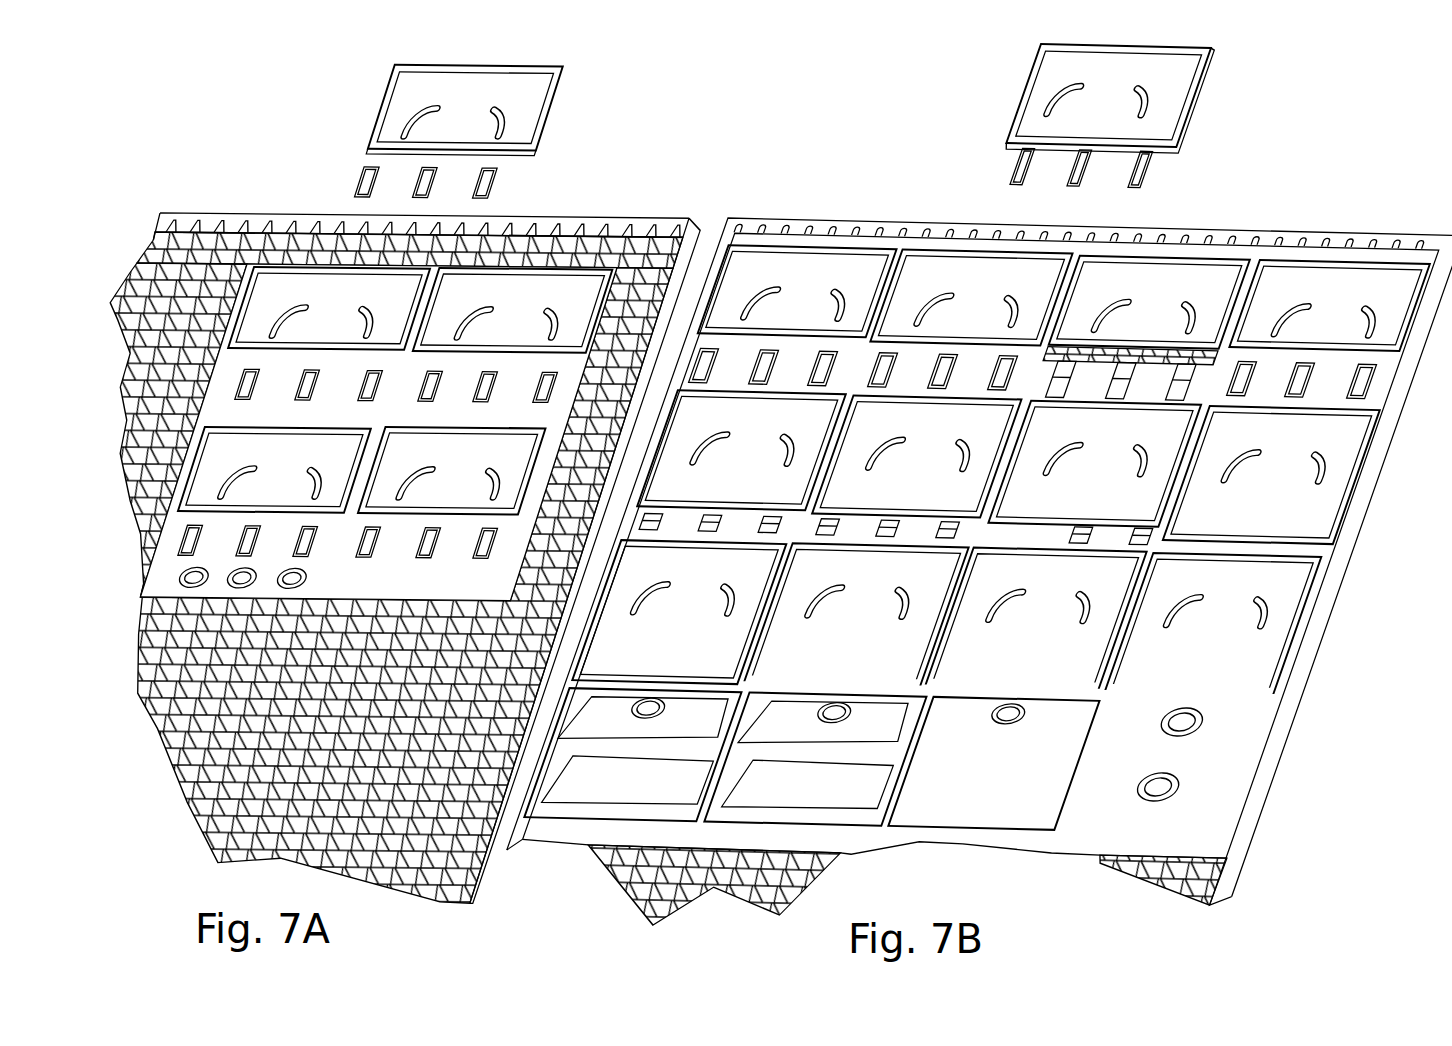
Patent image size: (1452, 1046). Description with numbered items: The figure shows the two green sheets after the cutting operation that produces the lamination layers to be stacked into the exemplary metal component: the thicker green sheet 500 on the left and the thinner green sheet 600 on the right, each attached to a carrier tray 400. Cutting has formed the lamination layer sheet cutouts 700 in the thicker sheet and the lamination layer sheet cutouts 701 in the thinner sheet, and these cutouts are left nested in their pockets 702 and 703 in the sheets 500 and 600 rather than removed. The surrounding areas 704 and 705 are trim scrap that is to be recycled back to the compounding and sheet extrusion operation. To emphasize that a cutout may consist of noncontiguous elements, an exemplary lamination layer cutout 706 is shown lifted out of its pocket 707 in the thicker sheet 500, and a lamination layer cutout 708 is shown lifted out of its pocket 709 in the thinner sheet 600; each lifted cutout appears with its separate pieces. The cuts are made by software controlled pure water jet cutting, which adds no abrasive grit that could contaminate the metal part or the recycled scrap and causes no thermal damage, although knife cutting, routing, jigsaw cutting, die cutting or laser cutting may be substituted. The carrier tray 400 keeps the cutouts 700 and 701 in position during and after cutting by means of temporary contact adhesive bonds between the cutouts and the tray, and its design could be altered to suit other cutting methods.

In FIG. 7A, the carrier tray 400 is at (607, 213).
In FIG. 7B, the carrier tray 400 is at (928, 215).
In FIG. 7A, the thicker green sheet 500 is at (617, 250).
In FIG. 7B, the thinner green sheet 600 is at (795, 228).
In FIG. 7A, the lamination layer sheet cutout 700 is at (292, 270).
In FIG. 7B, the lamination layer sheet cutout 701 is at (1300, 290).
In FIG. 7A, the pocket 702 is at (257, 270).
In FIG. 7B, the pocket 703 is at (1353, 250).
In FIG. 7A, the trim scrap area 704 is at (310, 243).
In FIG. 7B, the trim scrap area 705 is at (1270, 230).
In FIG. 7A, the lamination layer cutout 706 is at (553, 108).
In FIG. 7A, the pocket 707 is at (520, 270).
In FIG. 7B, the lamination layer cutout 708 is at (1205, 68).
In FIG. 7B, the pocket 709 is at (1185, 250).